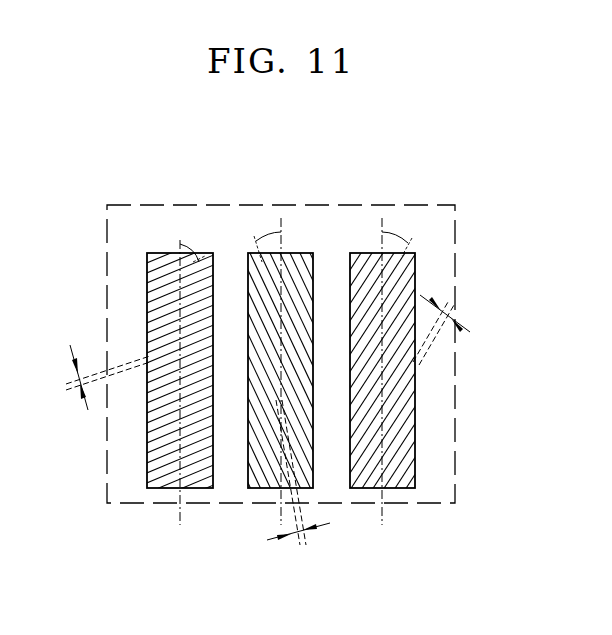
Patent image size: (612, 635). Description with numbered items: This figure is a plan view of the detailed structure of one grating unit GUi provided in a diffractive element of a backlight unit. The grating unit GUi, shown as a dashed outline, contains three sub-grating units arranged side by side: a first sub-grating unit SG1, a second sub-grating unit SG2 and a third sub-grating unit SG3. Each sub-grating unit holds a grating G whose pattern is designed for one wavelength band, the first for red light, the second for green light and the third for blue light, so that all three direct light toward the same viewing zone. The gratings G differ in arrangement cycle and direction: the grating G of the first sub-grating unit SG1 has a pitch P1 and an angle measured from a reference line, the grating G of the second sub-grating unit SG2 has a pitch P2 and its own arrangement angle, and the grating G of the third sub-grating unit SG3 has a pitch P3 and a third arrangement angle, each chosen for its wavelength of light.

The first sub-grating unit SG1 is at (163, 253).
The second sub-grating unit SG2 is at (298, 253).
The third sub-grating unit SG3 is at (384, 337).
The grating G is at (415, 440).
The grating unit GUi is at (455, 266).
The pitch of the grating of the first sub-grating unit P1 is at (95, 377).
The pitch of the grating of the second sub-grating unit P2 is at (298, 487).
The pitch of the grating of the third sub-grating unit P3 is at (446, 329).